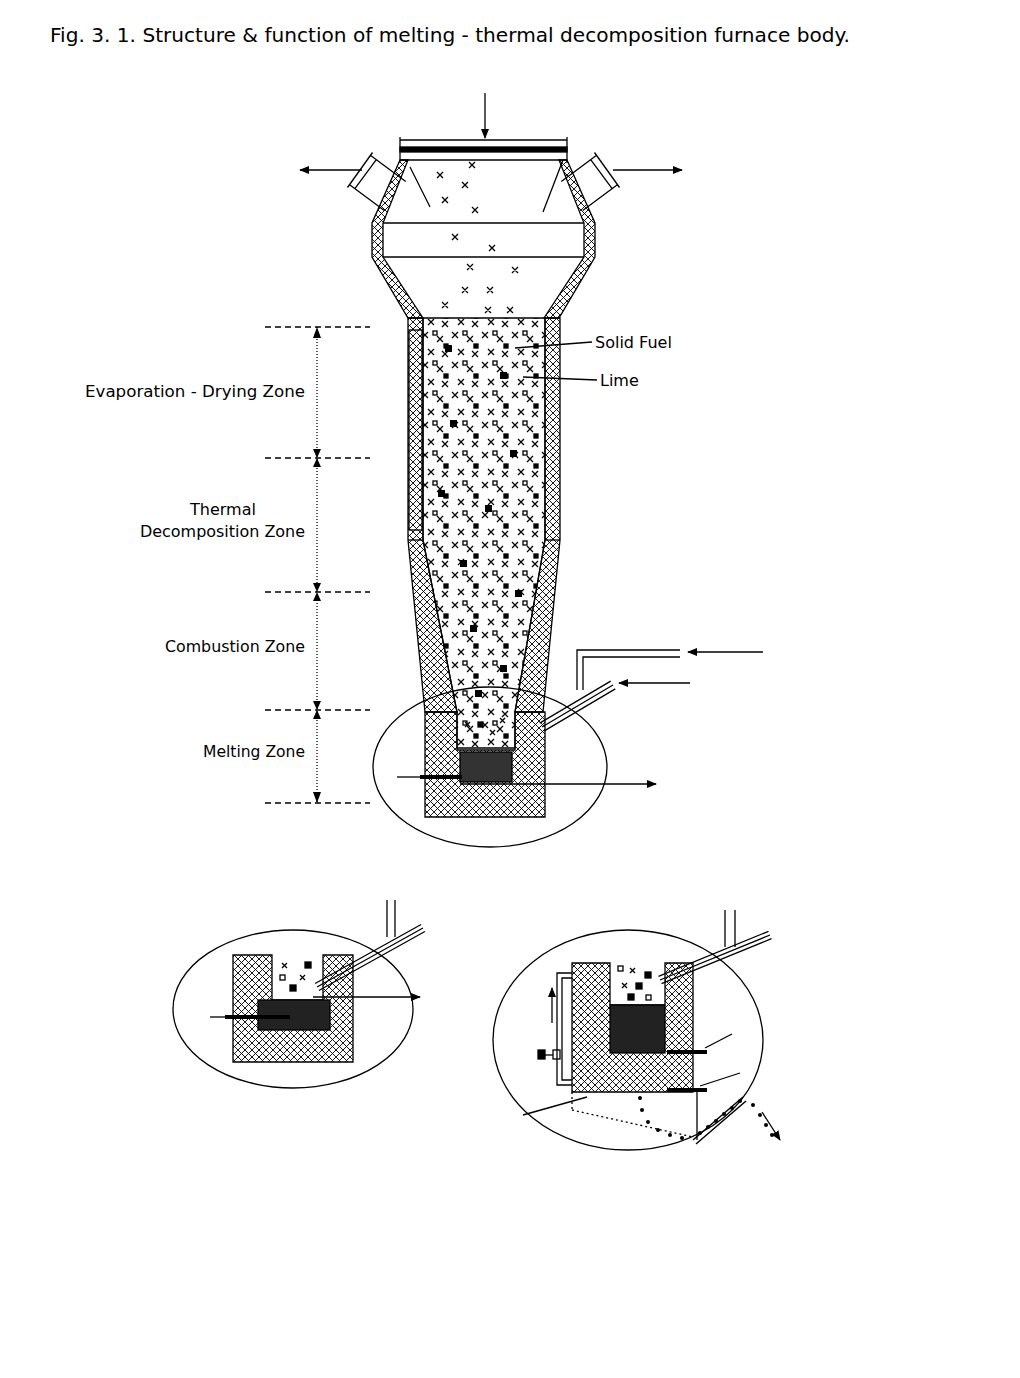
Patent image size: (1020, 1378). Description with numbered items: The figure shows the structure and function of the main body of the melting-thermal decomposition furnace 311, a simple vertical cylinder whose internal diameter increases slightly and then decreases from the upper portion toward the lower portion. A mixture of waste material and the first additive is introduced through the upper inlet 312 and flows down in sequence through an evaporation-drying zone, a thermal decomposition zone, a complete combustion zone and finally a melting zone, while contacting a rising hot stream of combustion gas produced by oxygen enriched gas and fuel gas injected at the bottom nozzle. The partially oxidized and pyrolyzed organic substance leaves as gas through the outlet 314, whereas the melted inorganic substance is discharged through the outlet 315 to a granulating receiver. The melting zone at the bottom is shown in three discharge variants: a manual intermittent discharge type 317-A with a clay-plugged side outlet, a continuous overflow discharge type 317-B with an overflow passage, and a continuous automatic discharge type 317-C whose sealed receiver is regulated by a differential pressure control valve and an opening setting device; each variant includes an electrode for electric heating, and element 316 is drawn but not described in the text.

The upper inlet 312 is at (512, 183).
The outlet 314 is at (372, 176).
The furnace 311 is at (560, 440).
The refractory wall lining 316 is at (549, 473).
The outlet 315 is at (548, 786).
The manual intermittent discharge type 317-A is at (615, 741).
The continuous overflow discharge type 317-B is at (301, 994).
The continuous automatic discharge type 317-C is at (672, 1048).